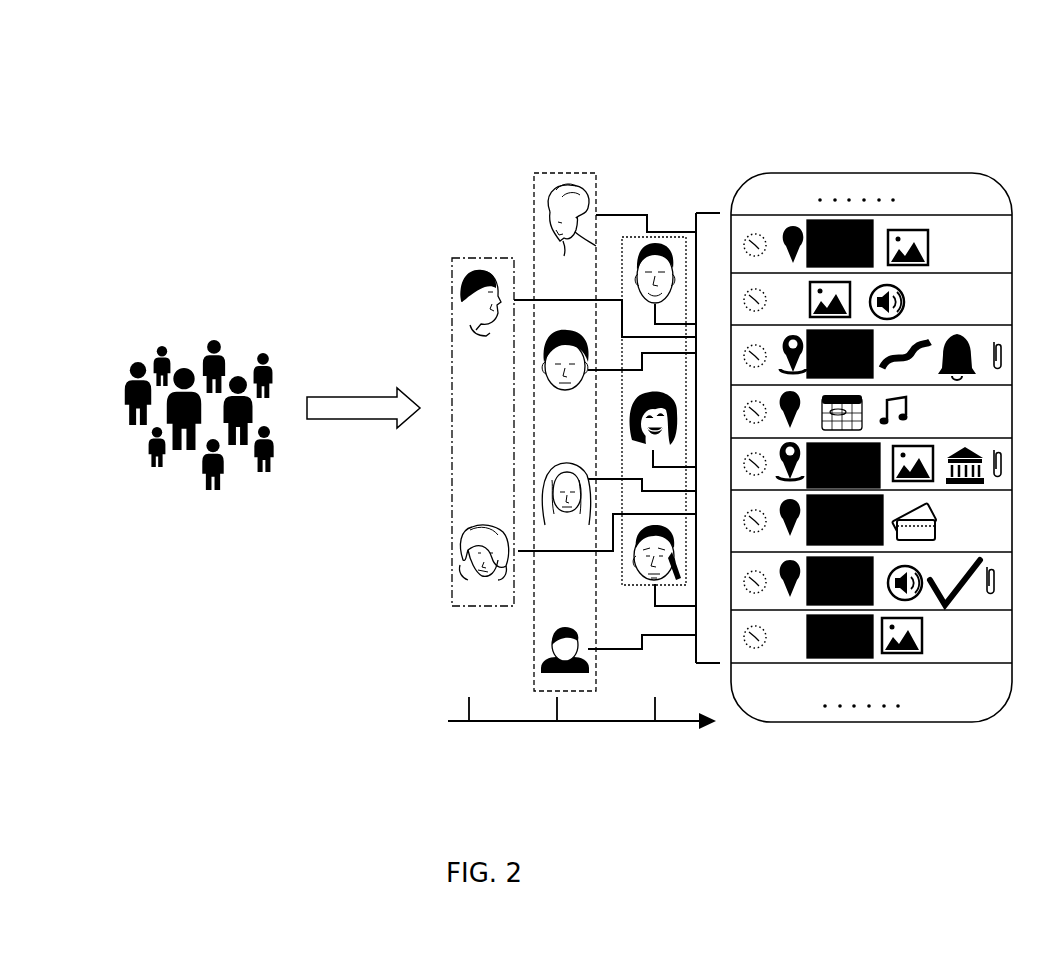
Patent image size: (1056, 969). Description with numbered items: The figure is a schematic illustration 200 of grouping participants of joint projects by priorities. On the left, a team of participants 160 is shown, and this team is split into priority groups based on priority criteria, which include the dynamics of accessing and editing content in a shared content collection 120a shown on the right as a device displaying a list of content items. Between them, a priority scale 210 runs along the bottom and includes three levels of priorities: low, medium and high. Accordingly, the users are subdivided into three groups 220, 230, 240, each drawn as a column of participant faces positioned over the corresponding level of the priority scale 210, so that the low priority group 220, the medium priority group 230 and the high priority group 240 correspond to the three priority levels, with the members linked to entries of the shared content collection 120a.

The team of participants 160 is at (235, 340).
The low priority group 220 is at (495, 256).
The medium priority group 230 is at (552, 172).
The high priority group 240 is at (665, 234).
The shared content collection 120a is at (783, 172).
The priority scale 210 is at (713, 767).
The schematic illustration 200 is at (1010, 128).